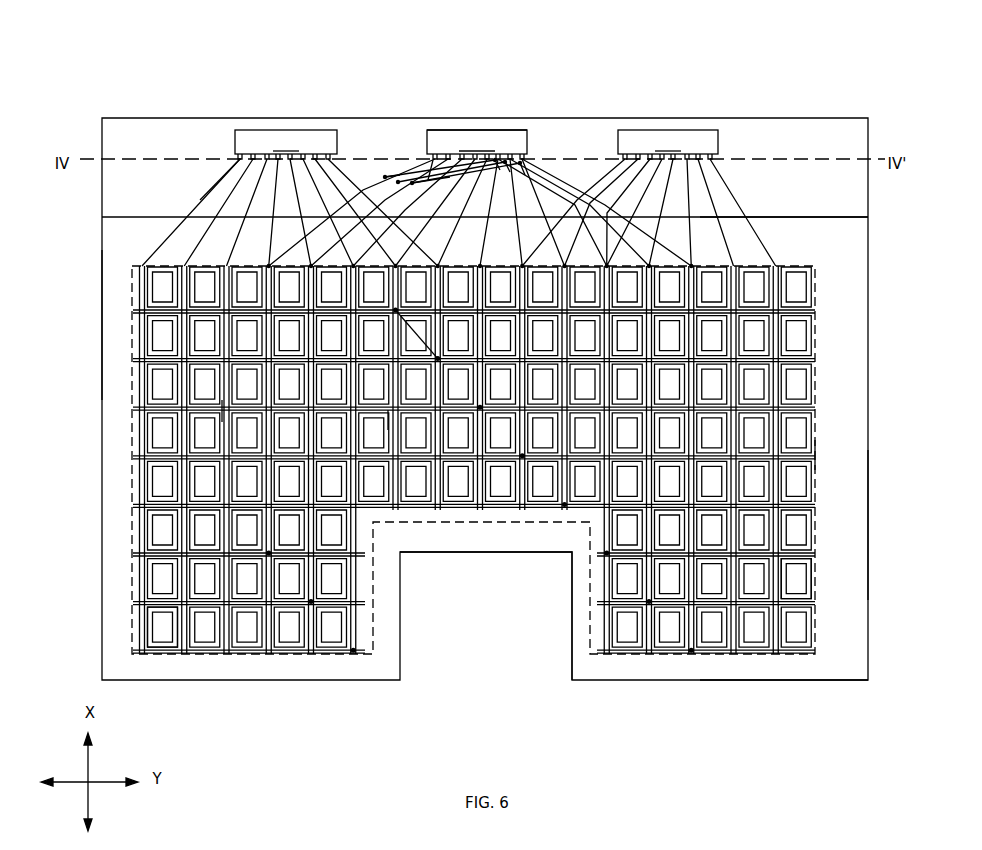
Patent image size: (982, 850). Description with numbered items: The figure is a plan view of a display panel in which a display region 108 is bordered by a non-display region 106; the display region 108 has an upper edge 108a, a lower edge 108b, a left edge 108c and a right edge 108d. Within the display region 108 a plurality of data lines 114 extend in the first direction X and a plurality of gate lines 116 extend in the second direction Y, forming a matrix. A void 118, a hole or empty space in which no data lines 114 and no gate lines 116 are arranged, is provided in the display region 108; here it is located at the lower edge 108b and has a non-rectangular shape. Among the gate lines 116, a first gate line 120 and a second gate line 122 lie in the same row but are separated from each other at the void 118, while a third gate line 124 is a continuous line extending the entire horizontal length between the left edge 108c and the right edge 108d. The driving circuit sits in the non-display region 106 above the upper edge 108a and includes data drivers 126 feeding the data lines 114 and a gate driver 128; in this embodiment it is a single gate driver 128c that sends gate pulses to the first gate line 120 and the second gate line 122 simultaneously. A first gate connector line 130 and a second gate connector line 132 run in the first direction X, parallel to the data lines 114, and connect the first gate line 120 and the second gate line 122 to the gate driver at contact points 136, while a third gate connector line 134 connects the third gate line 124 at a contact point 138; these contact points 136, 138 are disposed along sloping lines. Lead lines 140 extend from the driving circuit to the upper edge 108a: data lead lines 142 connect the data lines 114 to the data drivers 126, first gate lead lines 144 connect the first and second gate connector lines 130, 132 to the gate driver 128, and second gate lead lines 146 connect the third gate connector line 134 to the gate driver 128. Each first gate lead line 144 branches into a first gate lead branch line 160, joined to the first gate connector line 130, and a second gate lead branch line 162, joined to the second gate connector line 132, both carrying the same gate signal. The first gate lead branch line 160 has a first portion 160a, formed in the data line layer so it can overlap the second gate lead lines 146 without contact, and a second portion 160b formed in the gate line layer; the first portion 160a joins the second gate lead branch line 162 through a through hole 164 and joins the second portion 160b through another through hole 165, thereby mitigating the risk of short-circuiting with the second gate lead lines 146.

The non-display region 106 is at (835, 135).
The display region 108 is at (808, 458).
The upper edge 108a is at (850, 217).
The lower edge 108b is at (766, 680).
The left edge 108c is at (100, 328).
The right edge 108d is at (868, 534).
The data lines 114 is at (795, 283).
The gate lines 116 is at (810, 405).
The void 118 is at (475, 650).
The first gate line 120 is at (150, 603).
The second gate line 122 is at (797, 587).
The third gate line 124 is at (140, 457).
The data drivers 126 is at (476, 144).
The gate drivers 128 is at (478, 118).
The single gate driver 128c is at (477, 144).
The first gate connector line 130 is at (350, 528).
The second gate connector line 132 is at (222, 422).
The third gate connector line 134 is at (388, 430).
The contact point 136 is at (269, 553).
The contact point 138 is at (396, 310).
The lead lines 140 is at (213, 192).
The data lead lines 142 is at (326, 160).
The first gate lead lines 144 is at (495, 160).
The second gate lead lines 146 is at (433, 160).
The first gate lead branch line 160 is at (310, 33).
The first portion 160a is at (412, 183).
The second portion 160b is at (398, 182).
The second gate lead branch line 162 is at (520, 163).
The through hole 164 is at (505, 162).
The through hole 165 is at (385, 177).